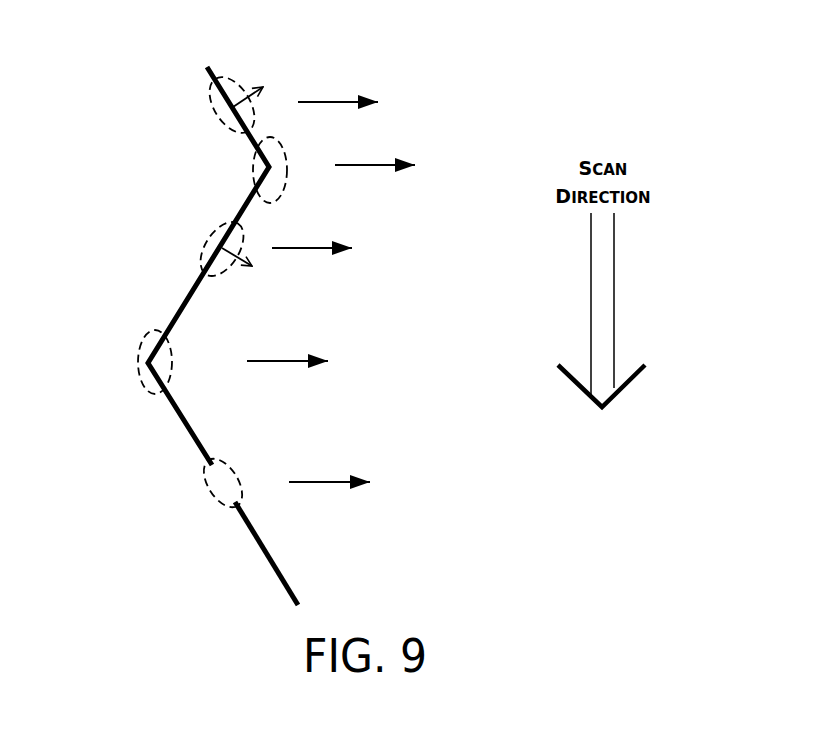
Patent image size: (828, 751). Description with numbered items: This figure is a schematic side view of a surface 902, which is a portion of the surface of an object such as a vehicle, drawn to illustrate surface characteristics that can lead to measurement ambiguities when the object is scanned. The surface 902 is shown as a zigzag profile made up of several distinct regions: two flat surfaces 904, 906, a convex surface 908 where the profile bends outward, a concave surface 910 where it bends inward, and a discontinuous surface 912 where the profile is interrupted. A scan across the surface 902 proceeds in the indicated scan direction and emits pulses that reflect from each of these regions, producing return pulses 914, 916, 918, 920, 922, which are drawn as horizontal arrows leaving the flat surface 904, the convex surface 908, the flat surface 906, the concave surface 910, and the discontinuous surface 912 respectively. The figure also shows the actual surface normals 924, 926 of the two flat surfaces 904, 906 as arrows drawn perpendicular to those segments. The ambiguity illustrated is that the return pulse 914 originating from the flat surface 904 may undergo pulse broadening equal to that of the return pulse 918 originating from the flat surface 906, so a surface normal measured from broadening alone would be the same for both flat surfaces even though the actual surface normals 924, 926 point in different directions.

The surface 902 is at (198, 55).
The flat surface 904 is at (220, 118).
The flat surface 906 is at (222, 228).
The convex surface 908 is at (256, 175).
The concave surface 910 is at (152, 335).
The discontinuous surface 912 is at (205, 485).
The return pulse 914 is at (338, 90).
The return pulse 916 is at (375, 152).
The return pulse 918 is at (312, 236).
The return pulse 920 is at (287, 348).
The return pulse 922 is at (329, 471).
The surface normal 924 is at (255, 82).
The surface normal 926 is at (243, 268).